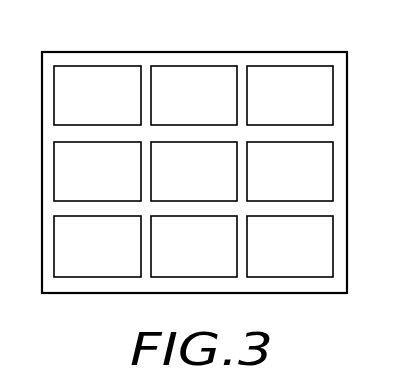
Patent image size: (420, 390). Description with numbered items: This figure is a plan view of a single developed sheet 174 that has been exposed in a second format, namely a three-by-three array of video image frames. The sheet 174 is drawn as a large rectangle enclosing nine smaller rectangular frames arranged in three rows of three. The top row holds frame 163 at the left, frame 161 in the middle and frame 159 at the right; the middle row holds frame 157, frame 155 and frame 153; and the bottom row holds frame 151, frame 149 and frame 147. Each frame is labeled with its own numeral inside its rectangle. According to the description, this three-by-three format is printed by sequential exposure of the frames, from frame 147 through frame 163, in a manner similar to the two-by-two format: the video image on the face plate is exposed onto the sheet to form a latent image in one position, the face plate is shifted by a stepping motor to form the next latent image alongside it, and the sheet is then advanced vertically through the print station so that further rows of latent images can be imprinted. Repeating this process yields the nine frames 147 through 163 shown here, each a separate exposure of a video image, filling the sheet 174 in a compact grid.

The paper sheet 174 is at (193, 52).
The frame 163 is at (97, 95).
The frame 161 is at (194, 95).
The frame 159 is at (290, 95).
The frame 157 is at (97, 171).
The frame 155 is at (194, 171).
The frame 153 is at (290, 171).
The frame 151 is at (97, 246).
The frame 149 is at (194, 246).
The frame 147 is at (290, 246).